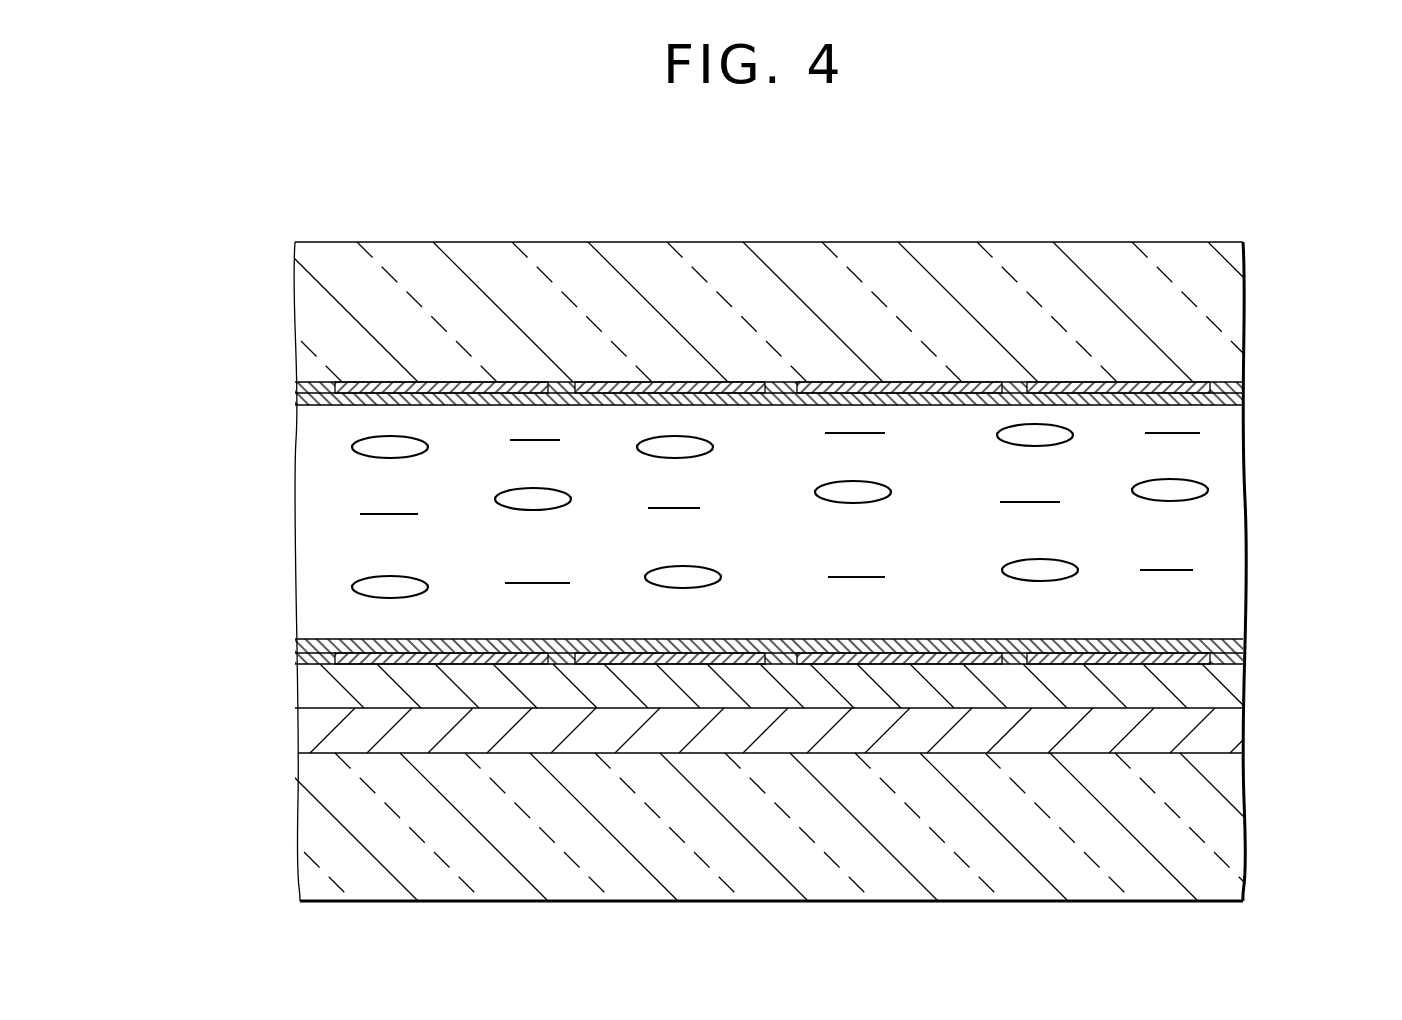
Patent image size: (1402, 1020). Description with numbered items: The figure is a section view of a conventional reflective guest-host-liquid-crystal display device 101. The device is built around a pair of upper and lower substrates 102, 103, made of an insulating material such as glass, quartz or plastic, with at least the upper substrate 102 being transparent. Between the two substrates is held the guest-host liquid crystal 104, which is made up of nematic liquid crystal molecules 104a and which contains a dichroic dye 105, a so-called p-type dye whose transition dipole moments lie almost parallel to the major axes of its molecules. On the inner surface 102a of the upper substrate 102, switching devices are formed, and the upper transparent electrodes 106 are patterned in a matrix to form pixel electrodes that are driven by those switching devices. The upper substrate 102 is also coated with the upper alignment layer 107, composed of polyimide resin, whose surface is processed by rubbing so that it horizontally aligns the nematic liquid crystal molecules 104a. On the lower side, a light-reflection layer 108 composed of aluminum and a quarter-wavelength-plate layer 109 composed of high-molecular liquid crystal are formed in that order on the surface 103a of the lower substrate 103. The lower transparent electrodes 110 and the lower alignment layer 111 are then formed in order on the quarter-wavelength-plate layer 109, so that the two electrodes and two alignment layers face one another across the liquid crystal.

The reflective guest-host-liquid-crystal display device 101 is at (1141, 230).
The upper substrate 102 is at (318, 338).
The inner surface of the upper substrate 102a is at (300, 400).
The lower substrate 103 is at (338, 852).
The surface of the lower substrate 103a is at (325, 755).
The guest-host liquid crystal 104 is at (337, 535).
The nematic liquid crystal molecules 104a is at (1207, 488).
The dichroic dye 105 is at (1168, 568).
The upper transparent electrodes 106 is at (1212, 385).
The upper alignment layer 107 is at (1210, 398).
The light-reflection layer 108 is at (1220, 730).
The quarter-wavelength-plate layer 109 is at (1208, 687).
The lower transparent electrodes 110 is at (1195, 640).
The lower alignment layer 111 is at (1198, 651).